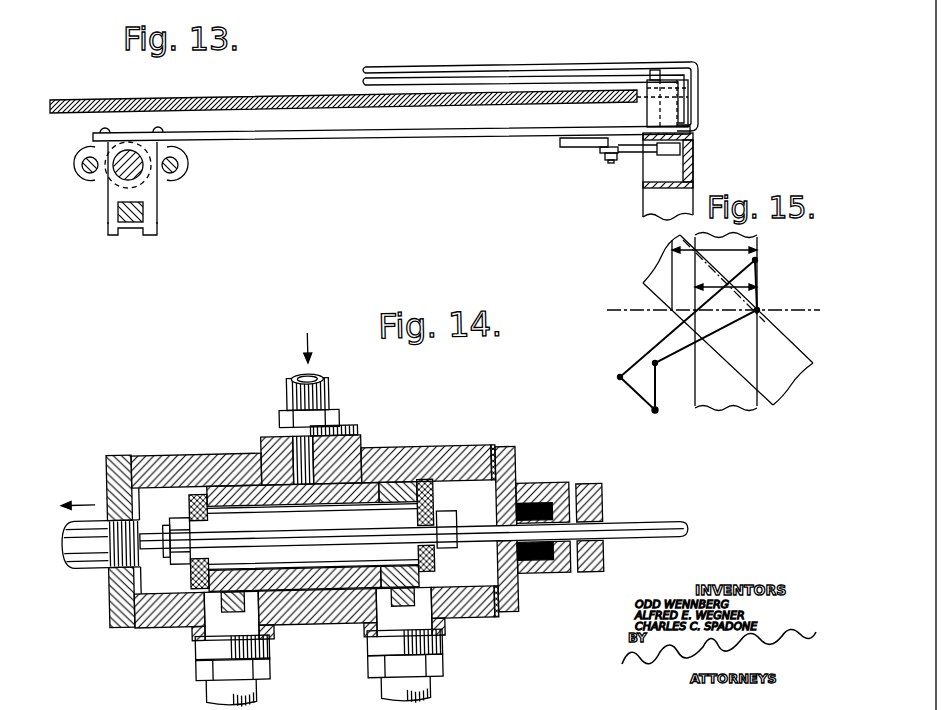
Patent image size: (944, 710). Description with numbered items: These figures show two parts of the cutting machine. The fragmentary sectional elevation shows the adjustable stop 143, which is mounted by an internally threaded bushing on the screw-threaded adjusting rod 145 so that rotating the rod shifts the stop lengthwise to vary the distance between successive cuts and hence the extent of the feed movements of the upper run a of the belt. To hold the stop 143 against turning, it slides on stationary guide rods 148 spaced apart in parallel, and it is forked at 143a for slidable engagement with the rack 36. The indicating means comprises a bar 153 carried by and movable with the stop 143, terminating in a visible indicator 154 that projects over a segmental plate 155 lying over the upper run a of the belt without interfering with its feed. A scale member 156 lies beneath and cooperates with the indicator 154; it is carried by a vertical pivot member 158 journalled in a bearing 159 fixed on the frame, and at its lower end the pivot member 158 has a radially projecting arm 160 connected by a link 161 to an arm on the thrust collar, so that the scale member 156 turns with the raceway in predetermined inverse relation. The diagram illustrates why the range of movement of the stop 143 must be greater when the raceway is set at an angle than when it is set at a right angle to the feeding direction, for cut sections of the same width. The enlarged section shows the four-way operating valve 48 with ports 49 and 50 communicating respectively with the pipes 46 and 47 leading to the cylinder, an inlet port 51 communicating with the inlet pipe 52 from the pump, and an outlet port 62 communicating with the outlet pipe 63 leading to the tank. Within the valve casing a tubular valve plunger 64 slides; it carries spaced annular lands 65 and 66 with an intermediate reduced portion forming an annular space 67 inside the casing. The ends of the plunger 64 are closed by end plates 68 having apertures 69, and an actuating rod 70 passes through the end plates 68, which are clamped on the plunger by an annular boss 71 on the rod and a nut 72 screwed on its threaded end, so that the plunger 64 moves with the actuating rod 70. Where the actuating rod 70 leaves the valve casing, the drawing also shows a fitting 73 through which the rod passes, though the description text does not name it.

In FIG. 13, the upper run of the belt a is at (298, 97).
In FIG. 13, the rack 36 is at (132, 224).
In FIG. 13, the adjustable stop 143 is at (158, 192).
In FIG. 13, the forked portion of the stop 143a is at (158, 233).
In FIG. 13, the screw-threaded adjusting rod 145 is at (118, 180).
In FIG. 13, the stationary guide rods 148 is at (84, 160).
In FIG. 13, the bar 153 is at (442, 136).
In FIG. 13, the visible indicator 154 is at (546, 57).
In FIG. 13, the segmental plate 155 is at (419, 82).
In FIG. 13, the scale member 156 is at (660, 72).
In FIG. 13, the vertical pivot member 158 is at (692, 112).
In FIG. 13, the bearing 159 is at (690, 86).
In FIG. 13, the arm 160 is at (630, 154).
In FIG. 15, the arm 160 is at (646, 396).
In FIG. 13, the link 161 is at (566, 147).
In FIG. 15, the link 161 is at (642, 355).
In FIG. 14, the pipe 46 is at (430, 687).
In FIG. 14, the pipe 47 is at (253, 686).
In FIG. 14, the four-way operating valve 48 is at (469, 454).
In FIG. 14, the port 49 is at (427, 628).
In FIG. 14, the port 50 is at (220, 621).
In FIG. 14, the inlet port 51 is at (338, 441).
In FIG. 14, the inlet pipe 52 is at (333, 400).
In FIG. 14, the outlet port 62 is at (145, 535).
In FIG. 14, the outlet pipe 63 is at (90, 568).
In FIG. 14, the tubular valve plunger 64 is at (328, 503).
In FIG. 14, the annular land 65 is at (412, 456).
In FIG. 14, the annular land 66 is at (224, 488).
In FIG. 14, the annular space 67 is at (279, 488).
In FIG. 14, the end plates 68 is at (190, 578).
In FIG. 14, the apertures 69 is at (208, 514).
In FIG. 14, the actuating rod 70 is at (355, 540).
In FIG. 14, the annular boss 71 is at (453, 551).
In FIG. 14, the nut 72 is at (180, 515).
In FIG. 14, the packing gland 73 is at (552, 486).